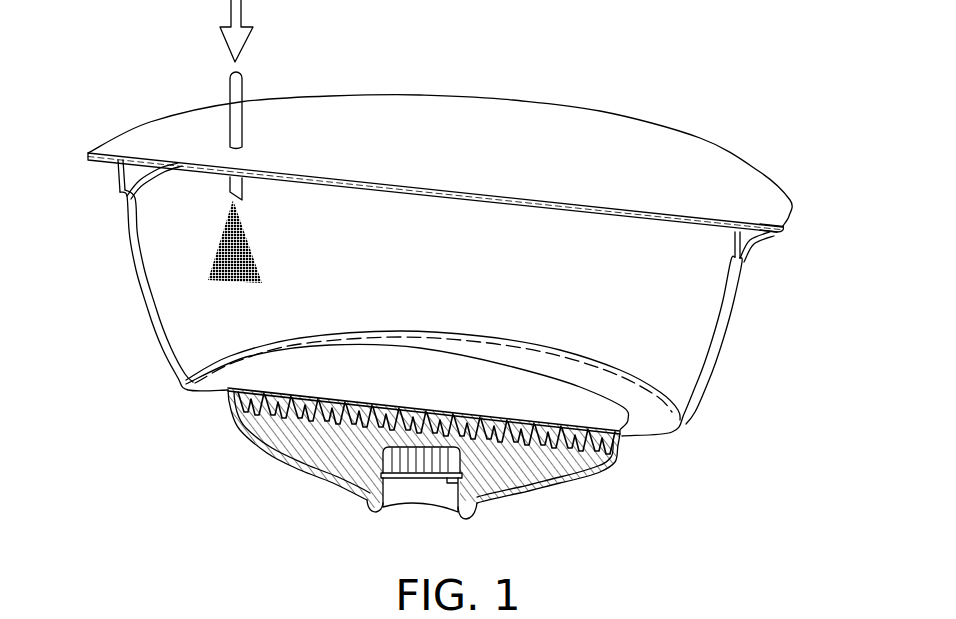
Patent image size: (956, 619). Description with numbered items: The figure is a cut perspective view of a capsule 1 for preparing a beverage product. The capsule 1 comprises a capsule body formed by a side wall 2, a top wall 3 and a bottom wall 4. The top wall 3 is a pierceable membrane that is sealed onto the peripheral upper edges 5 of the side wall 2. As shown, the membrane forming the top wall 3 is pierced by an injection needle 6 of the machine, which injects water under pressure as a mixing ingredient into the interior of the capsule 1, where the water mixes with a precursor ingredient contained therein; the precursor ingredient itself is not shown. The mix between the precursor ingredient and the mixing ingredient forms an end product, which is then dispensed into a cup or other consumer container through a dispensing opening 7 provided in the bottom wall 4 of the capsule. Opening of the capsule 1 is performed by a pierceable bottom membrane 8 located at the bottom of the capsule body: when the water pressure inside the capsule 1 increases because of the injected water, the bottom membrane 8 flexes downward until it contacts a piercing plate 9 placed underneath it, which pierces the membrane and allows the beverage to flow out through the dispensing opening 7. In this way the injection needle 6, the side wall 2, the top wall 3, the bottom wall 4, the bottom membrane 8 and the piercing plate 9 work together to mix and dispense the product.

The capsule 1 is at (437, 279).
The side wall 2 is at (132, 268).
The top wall 3 is at (515, 120).
The bottom wall 4 is at (400, 456).
The peripheral upper edges 5 is at (763, 236).
The injection needle 6 is at (233, 90).
The dispensing opening 7 is at (423, 493).
The pierceable bottom membrane 8 is at (300, 373).
The piercing plate 9 is at (355, 425).